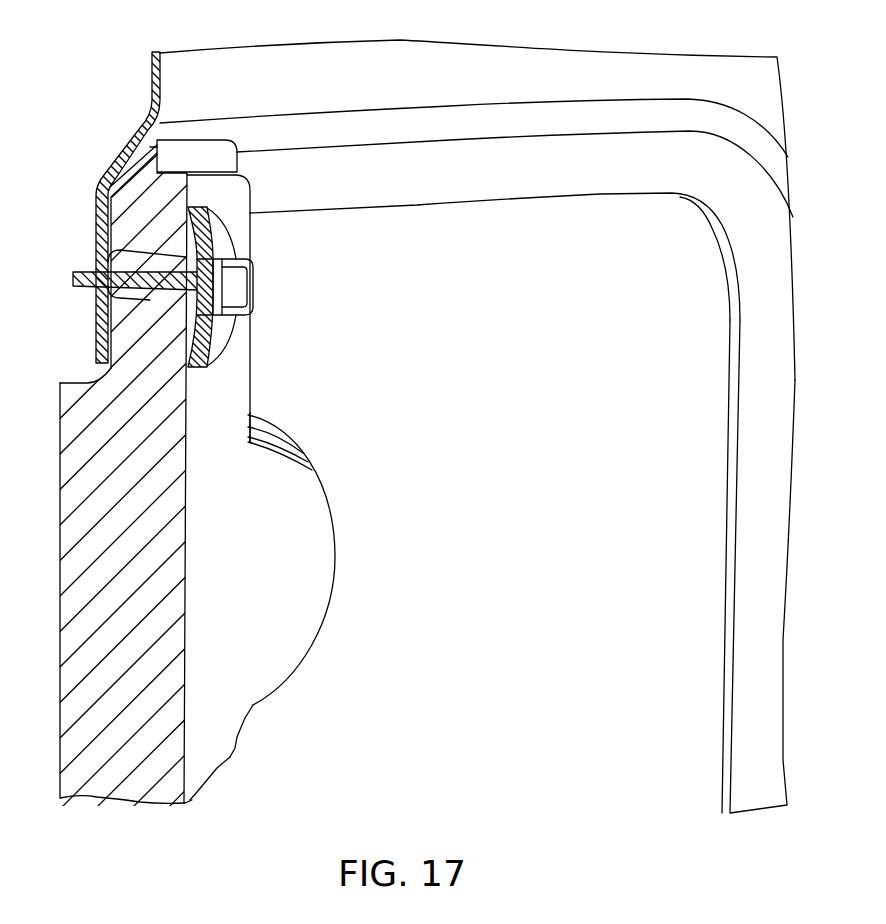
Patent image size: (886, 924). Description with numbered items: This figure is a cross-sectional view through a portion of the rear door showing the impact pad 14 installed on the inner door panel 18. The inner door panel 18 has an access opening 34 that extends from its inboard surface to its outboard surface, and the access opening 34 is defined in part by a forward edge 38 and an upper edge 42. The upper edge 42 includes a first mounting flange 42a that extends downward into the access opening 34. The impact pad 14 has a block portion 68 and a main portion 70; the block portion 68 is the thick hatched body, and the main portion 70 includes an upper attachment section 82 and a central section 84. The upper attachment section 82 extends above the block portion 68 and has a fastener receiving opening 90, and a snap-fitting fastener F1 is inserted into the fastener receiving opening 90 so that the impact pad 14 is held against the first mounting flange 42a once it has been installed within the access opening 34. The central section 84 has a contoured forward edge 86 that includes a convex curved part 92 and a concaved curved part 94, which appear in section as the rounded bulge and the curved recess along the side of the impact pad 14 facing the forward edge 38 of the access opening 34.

The inner door panel 18 is at (598, 53).
The upper edge 42 is at (413, 206).
The first mounting flange 42a is at (97, 315).
The access opening 34 is at (531, 200).
The forward edge 38 is at (733, 487).
The upper attachment section 82 is at (222, 202).
The central section 84 is at (243, 577).
The block portion 68 is at (78, 383).
The fastener receiving opening 90 is at (165, 262).
The snap-fitting fastener F1 is at (240, 284).
The convex curved part 92 is at (336, 557).
The contoured forward edge 86 is at (330, 604).
The impact pad 14 is at (327, 496).
The main portion 70 is at (252, 647).
The concaved curved part 94 is at (210, 775).